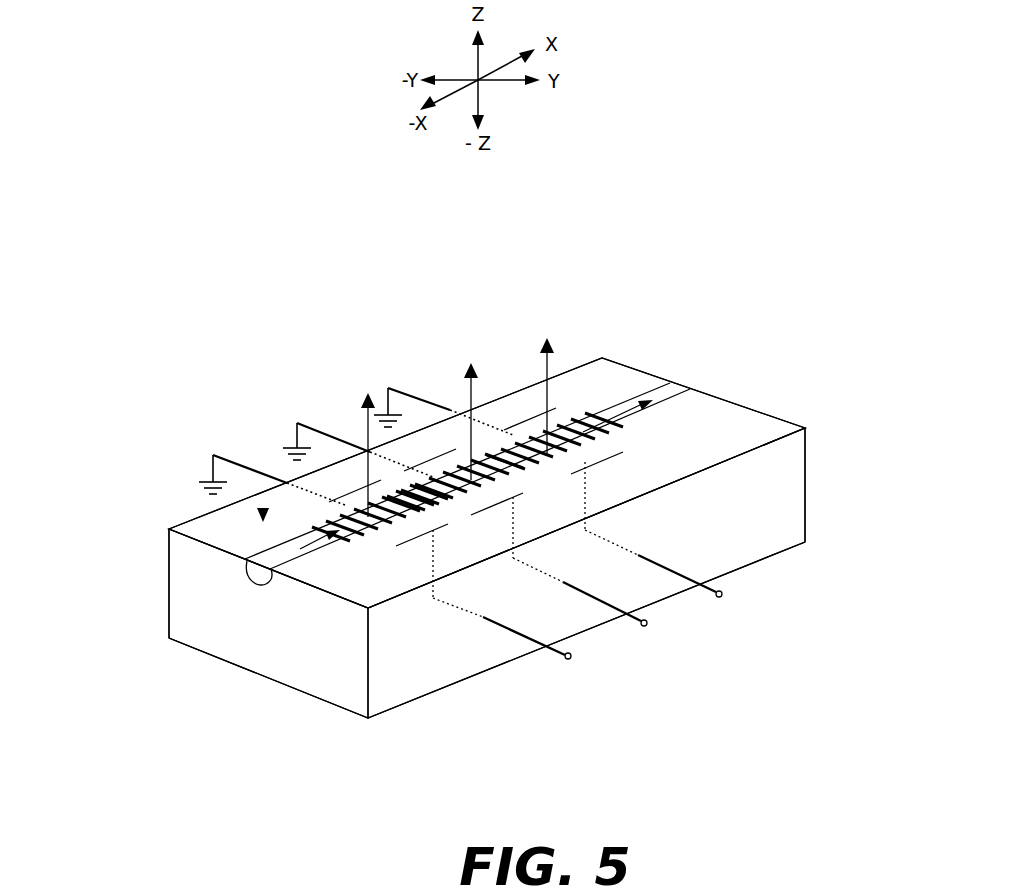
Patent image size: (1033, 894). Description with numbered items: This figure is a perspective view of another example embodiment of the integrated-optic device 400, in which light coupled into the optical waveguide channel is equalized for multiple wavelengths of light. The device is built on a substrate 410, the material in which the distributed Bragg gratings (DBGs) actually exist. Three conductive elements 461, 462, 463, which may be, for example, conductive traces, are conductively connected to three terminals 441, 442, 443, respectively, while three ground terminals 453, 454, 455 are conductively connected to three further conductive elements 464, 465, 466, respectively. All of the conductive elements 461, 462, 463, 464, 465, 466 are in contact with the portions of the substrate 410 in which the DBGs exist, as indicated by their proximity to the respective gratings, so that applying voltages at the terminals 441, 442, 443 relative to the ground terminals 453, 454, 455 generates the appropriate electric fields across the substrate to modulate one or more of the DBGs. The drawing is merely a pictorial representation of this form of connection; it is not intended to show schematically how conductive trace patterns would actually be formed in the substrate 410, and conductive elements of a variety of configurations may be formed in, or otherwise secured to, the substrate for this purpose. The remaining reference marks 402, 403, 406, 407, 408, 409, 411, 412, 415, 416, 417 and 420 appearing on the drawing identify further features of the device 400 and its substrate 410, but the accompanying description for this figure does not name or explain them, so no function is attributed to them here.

The integrated-optic device 400 is at (777, 210).
The bottom surface of substrate 402 is at (396, 708).
The left end face 403 is at (179, 608).
The front side surface 406 is at (321, 682).
The right end face 407 is at (779, 465).
The input light 408 is at (263, 510).
The right side surface 409 is at (745, 534).
The substrate 410 is at (724, 405).
The optical waveguide 411 is at (251, 548).
The waveguide output 412 is at (625, 400).
The first output beam lambda1 415 is at (367, 433).
The second output beam lambda2 416 is at (471, 400).
The third output beam lambda3 417 is at (548, 370).
The input port 420 is at (226, 576).
The terminal 441 is at (522, 637).
The terminal 442 is at (605, 605).
The terminal 443 is at (677, 575).
The ground terminal 453 is at (213, 455).
The ground terminal 454 is at (297, 423).
The ground terminal 455 is at (389, 388).
The conductive element 461 is at (447, 525).
The conductive element 462 is at (523, 490).
The conductive element 463 is at (600, 457).
The conductive element 464 is at (372, 492).
The conductive element 465 is at (466, 454).
The conductive element 466 is at (541, 420).